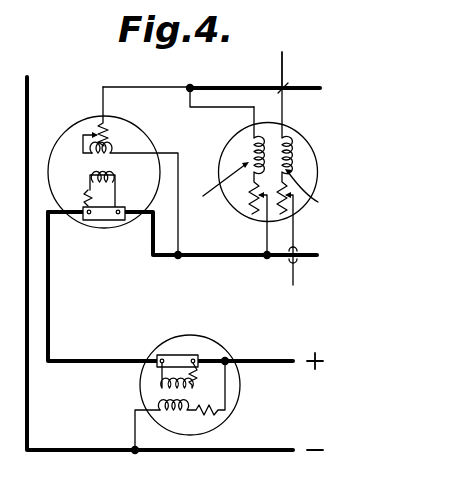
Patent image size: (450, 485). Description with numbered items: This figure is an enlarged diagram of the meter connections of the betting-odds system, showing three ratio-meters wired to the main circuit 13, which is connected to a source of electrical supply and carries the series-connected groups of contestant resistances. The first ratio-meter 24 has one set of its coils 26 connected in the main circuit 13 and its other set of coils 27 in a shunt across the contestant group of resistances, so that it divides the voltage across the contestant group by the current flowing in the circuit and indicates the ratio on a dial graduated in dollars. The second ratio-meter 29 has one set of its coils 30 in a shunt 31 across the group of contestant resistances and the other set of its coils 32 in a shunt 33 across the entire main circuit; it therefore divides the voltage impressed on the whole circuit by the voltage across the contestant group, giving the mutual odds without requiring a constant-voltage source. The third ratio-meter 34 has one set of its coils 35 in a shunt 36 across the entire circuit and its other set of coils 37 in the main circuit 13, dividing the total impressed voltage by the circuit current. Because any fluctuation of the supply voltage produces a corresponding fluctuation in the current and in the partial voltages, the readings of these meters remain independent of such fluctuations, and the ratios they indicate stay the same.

The main circuit 13 is at (268, 449).
The ratio-meter 24 is at (146, 137).
The coils 26 is at (112, 186).
The coils 27 is at (92, 158).
The ratio-meter 29 is at (297, 136).
The coils 30 is at (220, 189).
The shunt 31 is at (216, 108).
The coils 32 is at (306, 200).
The shunt 33 is at (288, 77).
The ratio-meter 34 is at (206, 345).
The coils 35 is at (183, 415).
The shunt 36 is at (135, 433).
The coils 37 is at (160, 390).